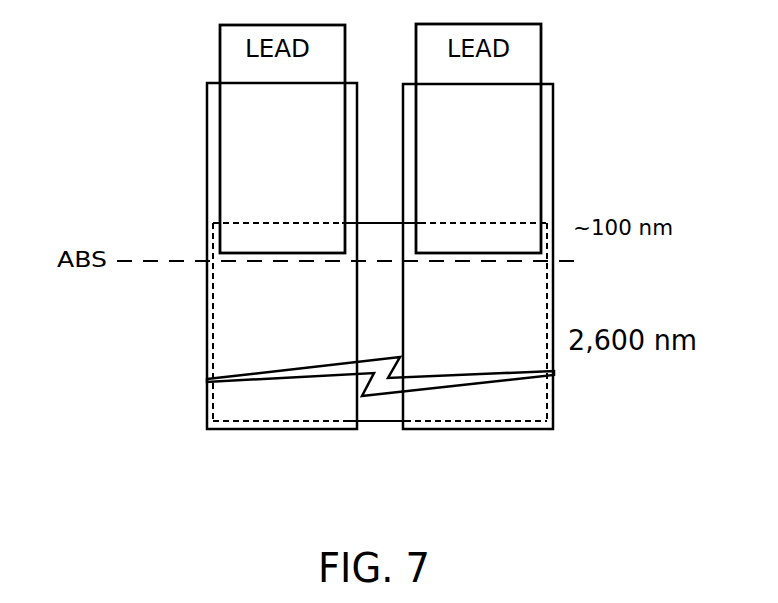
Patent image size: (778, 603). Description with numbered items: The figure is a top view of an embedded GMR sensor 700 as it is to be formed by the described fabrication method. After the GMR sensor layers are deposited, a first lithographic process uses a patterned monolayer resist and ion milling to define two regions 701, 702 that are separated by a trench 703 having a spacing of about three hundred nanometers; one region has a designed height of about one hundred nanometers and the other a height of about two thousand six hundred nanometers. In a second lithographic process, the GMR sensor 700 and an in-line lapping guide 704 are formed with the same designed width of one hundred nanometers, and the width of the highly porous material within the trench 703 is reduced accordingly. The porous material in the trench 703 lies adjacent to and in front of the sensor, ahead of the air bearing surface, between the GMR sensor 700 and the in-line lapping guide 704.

The embedded GMR sensor 700 is at (376, 235).
The first region 701 is at (207, 318).
The second region 702 is at (548, 223).
The trench 703 is at (373, 264).
The in-line lapping guide 704 is at (380, 408).